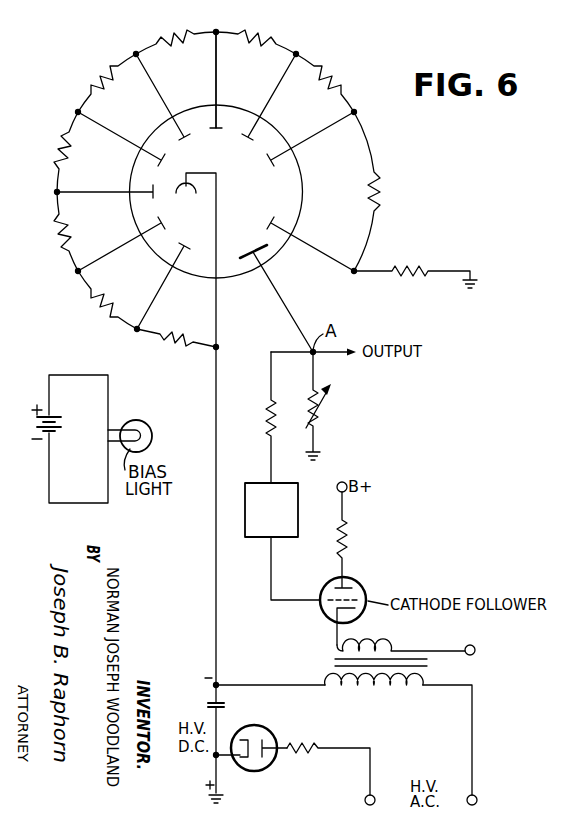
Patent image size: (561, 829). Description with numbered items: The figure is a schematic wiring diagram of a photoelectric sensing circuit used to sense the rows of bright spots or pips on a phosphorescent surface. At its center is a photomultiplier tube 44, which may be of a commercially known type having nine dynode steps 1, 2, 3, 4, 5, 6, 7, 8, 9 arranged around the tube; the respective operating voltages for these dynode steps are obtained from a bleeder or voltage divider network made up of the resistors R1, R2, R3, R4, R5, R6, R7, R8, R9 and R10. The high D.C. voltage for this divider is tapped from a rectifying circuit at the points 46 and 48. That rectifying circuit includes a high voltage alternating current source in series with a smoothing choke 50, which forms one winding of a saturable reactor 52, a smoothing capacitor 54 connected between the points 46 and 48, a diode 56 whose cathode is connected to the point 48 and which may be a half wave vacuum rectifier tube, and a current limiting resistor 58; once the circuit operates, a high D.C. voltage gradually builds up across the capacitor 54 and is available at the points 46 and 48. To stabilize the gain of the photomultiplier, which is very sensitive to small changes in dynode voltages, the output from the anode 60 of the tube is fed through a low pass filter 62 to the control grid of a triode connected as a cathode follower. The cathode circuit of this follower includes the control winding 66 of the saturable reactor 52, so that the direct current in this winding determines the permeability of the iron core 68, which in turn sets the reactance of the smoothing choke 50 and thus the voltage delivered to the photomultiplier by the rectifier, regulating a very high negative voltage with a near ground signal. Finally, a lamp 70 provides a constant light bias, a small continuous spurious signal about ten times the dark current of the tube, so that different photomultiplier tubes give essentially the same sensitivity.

The dynode step 1 is at (166, 277).
The dynode step 2 is at (127, 240).
The dynode step 3 is at (112, 191).
The dynode step 4 is at (126, 141).
The dynode step 5 is at (165, 105).
The dynode step 6 is at (216, 89).
The dynode step 7 is at (267, 105).
The dynode step 8 is at (306, 142).
The dynode step 9 is at (303, 239).
The voltage divider resistor R1 is at (175, 353).
The voltage divider resistor R2 is at (95, 305).
The voltage divider resistor R3 is at (57, 237).
The voltage divider resistor R4 is at (72, 150).
The voltage divider resistor R5 is at (93, 77).
The voltage divider resistor R6 is at (183, 47).
The voltage divider resistor R7 is at (279, 38).
The voltage divider resistor R8 is at (337, 82).
The voltage divider resistor R9 is at (380, 182).
The voltage divider resistor R10 is at (411, 262).
The photomultiplier tube 44 is at (197, 279).
The tapping point 46 is at (218, 684).
The tapping point 48 is at (216, 756).
The smoothing choke 50 is at (355, 692).
The saturable reactor 52 is at (392, 675).
The smoothing capacitor 54 is at (210, 703).
The diode 56 is at (248, 768).
The current limiting resistor 58 is at (311, 742).
The anode 60 is at (274, 292).
The low pass filter 62 is at (260, 537).
The control winding 66 is at (382, 647).
The core 68 is at (333, 662).
The lamp 70 is at (148, 426).